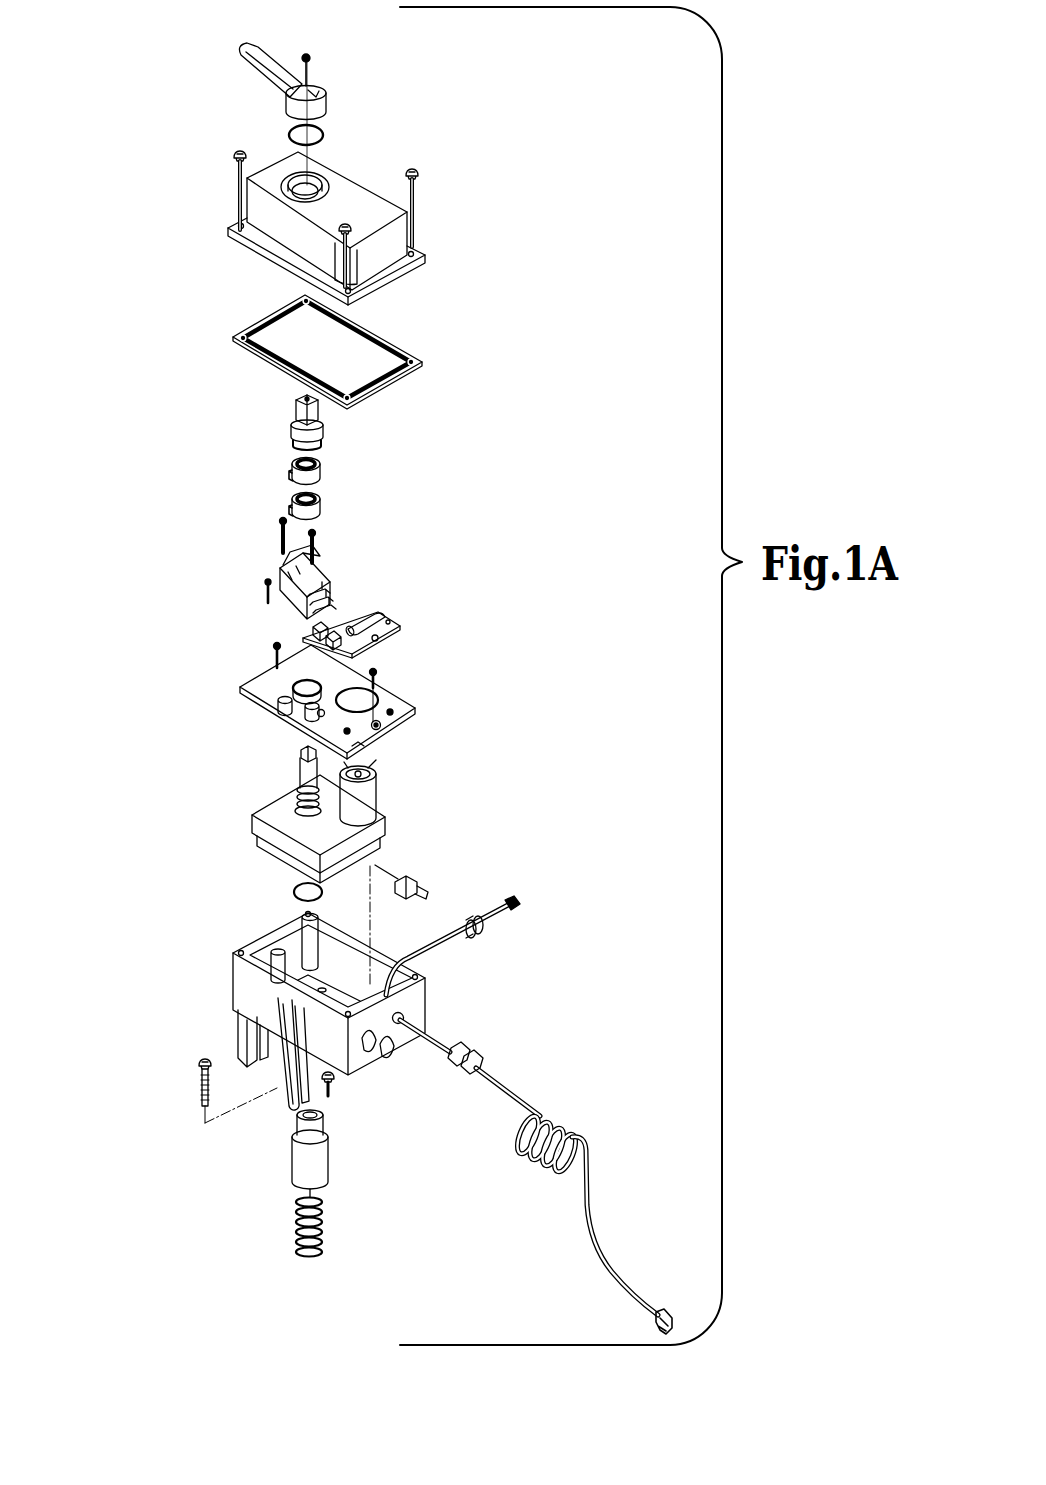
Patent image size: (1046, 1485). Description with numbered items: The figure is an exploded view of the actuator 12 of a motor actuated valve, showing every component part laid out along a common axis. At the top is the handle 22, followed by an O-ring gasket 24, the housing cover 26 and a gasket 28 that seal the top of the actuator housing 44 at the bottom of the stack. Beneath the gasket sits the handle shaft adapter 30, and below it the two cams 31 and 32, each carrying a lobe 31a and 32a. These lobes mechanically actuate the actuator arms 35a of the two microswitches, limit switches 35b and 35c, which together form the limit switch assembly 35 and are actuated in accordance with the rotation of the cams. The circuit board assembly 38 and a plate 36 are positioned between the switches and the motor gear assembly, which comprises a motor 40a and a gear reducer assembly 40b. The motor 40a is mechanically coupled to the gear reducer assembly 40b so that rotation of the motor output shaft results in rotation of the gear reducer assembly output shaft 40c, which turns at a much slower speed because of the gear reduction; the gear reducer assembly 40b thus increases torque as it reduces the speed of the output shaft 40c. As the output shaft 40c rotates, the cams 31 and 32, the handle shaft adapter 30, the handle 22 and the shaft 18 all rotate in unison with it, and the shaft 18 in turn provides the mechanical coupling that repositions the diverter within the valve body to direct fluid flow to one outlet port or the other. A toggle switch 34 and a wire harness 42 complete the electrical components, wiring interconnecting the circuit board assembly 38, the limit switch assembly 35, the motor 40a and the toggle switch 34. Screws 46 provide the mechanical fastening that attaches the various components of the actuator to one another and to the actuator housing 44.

The actuator 12 is at (158, 212).
The shaft 18 is at (292, 1148).
The handle 22 is at (328, 92).
The O-ring gasket 24 is at (324, 134).
The housing cover 26 is at (428, 256).
The gasket 28 is at (422, 362).
The handle shaft adapter 30 is at (288, 420).
The cam 31 is at (322, 468).
The lobe 31a is at (291, 476).
The cam 32 is at (322, 505).
The lobe 32a is at (291, 511).
The toggle switch 34 is at (422, 888).
The limit switch assembly 35 is at (327, 590).
The actuator arms 35a is at (290, 592).
The limit switch 35b is at (315, 580).
The limit switch 35c is at (308, 614).
The plate 36 is at (420, 712).
The circuit board assembly 38 is at (395, 620).
The motor 40a is at (374, 821).
The gear reducer assembly 40b is at (333, 843).
The gear reducer assembly output shaft 40c is at (298, 760).
The wire harness 42 is at (443, 953).
The actuator housing 44 is at (233, 967).
The screws 46 is at (416, 173).